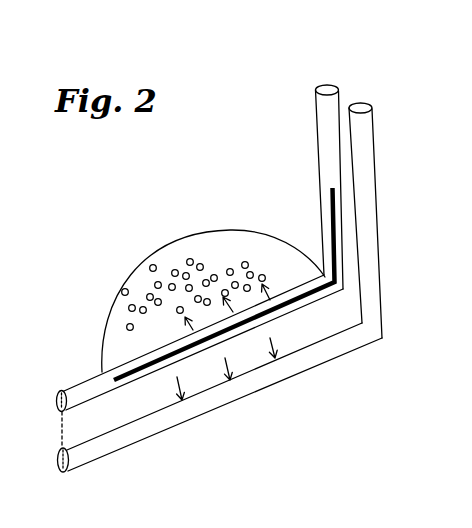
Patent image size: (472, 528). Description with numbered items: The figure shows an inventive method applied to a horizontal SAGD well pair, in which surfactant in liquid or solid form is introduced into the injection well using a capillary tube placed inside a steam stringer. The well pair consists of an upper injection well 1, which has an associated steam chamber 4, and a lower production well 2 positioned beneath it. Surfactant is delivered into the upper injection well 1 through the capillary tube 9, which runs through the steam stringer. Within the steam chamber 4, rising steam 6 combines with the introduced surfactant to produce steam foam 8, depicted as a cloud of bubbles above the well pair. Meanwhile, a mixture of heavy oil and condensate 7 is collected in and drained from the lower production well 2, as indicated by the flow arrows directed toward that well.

The upper injection well 1 is at (338, 93).
The lower production well 2 is at (374, 142).
The steam chamber 4 is at (100, 320).
The rising steam 6 is at (227, 307).
The mixture of heavy oil and condensate 7 is at (220, 373).
The steam foam 8 is at (194, 288).
The capillary tube 9 is at (330, 209).